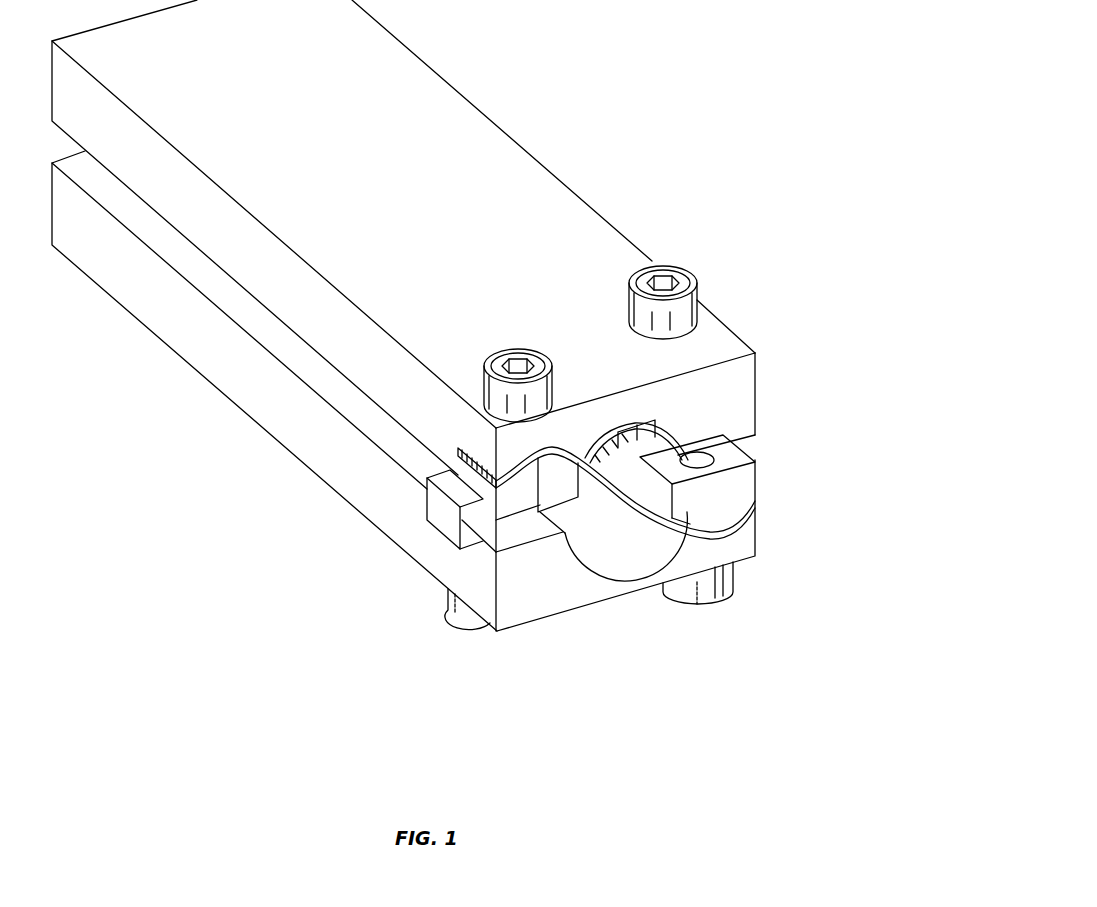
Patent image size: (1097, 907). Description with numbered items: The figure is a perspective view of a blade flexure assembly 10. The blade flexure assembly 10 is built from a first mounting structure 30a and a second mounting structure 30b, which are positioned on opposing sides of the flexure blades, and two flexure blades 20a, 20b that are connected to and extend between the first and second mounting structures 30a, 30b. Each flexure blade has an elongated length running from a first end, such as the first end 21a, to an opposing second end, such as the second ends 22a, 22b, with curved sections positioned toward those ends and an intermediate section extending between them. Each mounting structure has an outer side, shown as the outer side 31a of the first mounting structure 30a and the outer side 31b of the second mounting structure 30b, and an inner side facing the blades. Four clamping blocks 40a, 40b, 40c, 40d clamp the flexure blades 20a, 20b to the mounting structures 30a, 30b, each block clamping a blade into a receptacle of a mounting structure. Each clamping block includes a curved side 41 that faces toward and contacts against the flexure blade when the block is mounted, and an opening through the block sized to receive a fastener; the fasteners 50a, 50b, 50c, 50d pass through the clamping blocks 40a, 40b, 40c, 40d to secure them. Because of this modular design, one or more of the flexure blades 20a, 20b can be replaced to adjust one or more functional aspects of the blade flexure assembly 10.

The blade flexure assembly 10 is at (683, 103).
The flexure blade 20a is at (616, 487).
The flexure blade 20b is at (700, 520).
The first end 21a is at (496, 506).
The second end 22a is at (752, 502).
The second end 22b is at (470, 512).
The first mounting structure 30a is at (605, 255).
The second mounting structure 30b is at (313, 445).
The outer side 31a is at (496, 428).
The outer side 31b is at (755, 556).
The clamping block 40a is at (520, 505).
The clamping block 40b is at (742, 490).
The clamping block 40c is at (443, 523).
The clamping block 40d is at (668, 428).
The curved side 41 is at (714, 460).
The fastener 50a is at (518, 347).
The fastener 50b is at (690, 312).
The fastener 50c is at (462, 617).
The fastener 50d is at (703, 587).